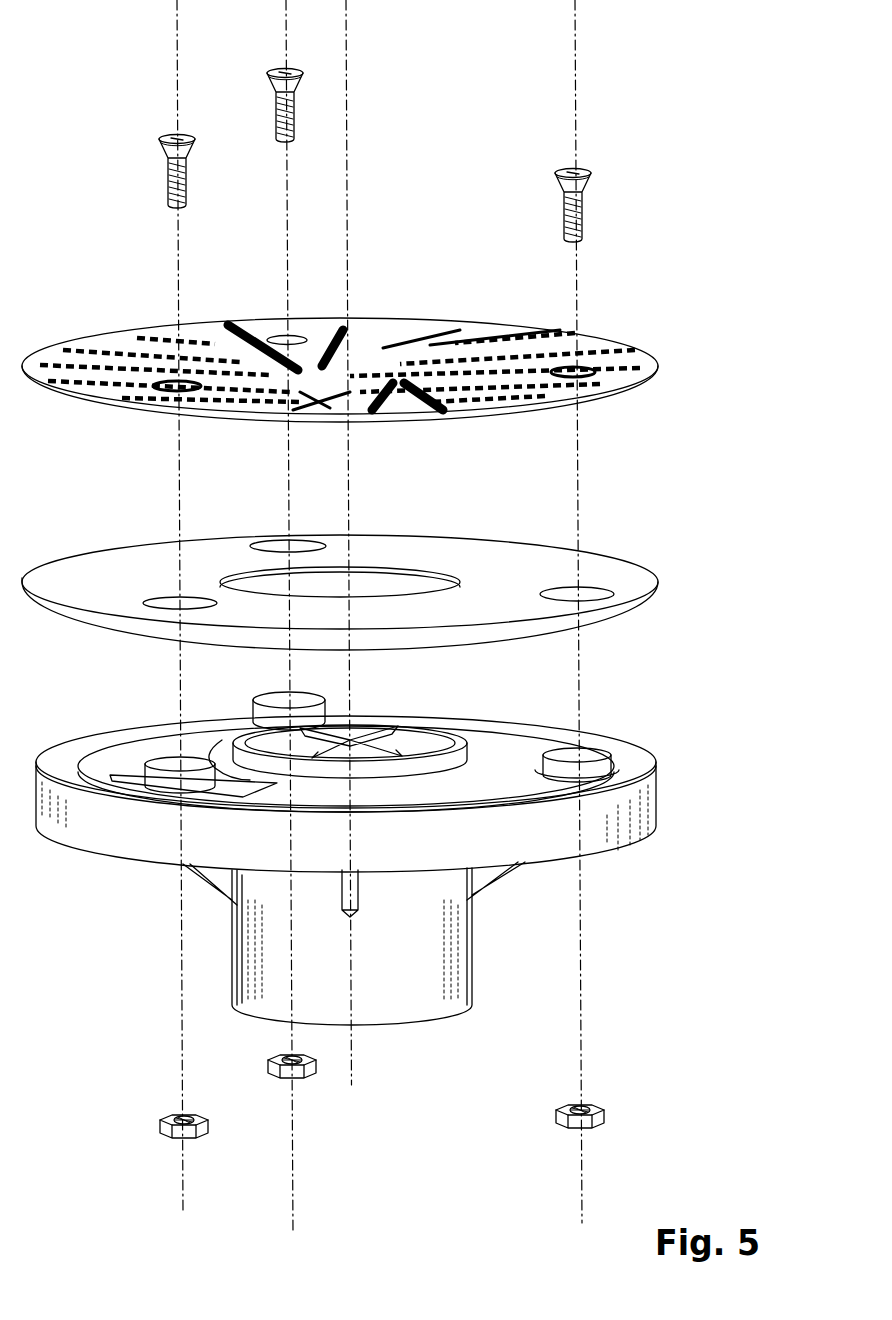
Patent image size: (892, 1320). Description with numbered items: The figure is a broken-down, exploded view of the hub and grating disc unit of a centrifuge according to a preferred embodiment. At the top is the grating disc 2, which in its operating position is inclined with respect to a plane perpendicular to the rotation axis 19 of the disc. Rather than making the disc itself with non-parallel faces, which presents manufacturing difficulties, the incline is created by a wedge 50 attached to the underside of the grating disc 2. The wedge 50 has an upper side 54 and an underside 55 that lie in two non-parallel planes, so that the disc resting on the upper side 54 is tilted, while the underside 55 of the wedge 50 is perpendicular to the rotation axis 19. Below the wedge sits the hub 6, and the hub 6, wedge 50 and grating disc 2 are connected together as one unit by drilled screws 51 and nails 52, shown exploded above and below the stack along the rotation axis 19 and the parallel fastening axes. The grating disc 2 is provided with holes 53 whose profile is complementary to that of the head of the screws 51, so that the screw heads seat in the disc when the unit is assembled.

The grating disc 2 is at (340, 370).
The hub 6 is at (653, 798).
The rotation axis 19 is at (347, 122).
The wedge 50 is at (350, 590).
The drilled screws 51 is at (583, 205).
The nails 52 is at (568, 1103).
The holes 53 is at (280, 336).
The upper side 54 is at (78, 580).
The underside 55 is at (92, 628).